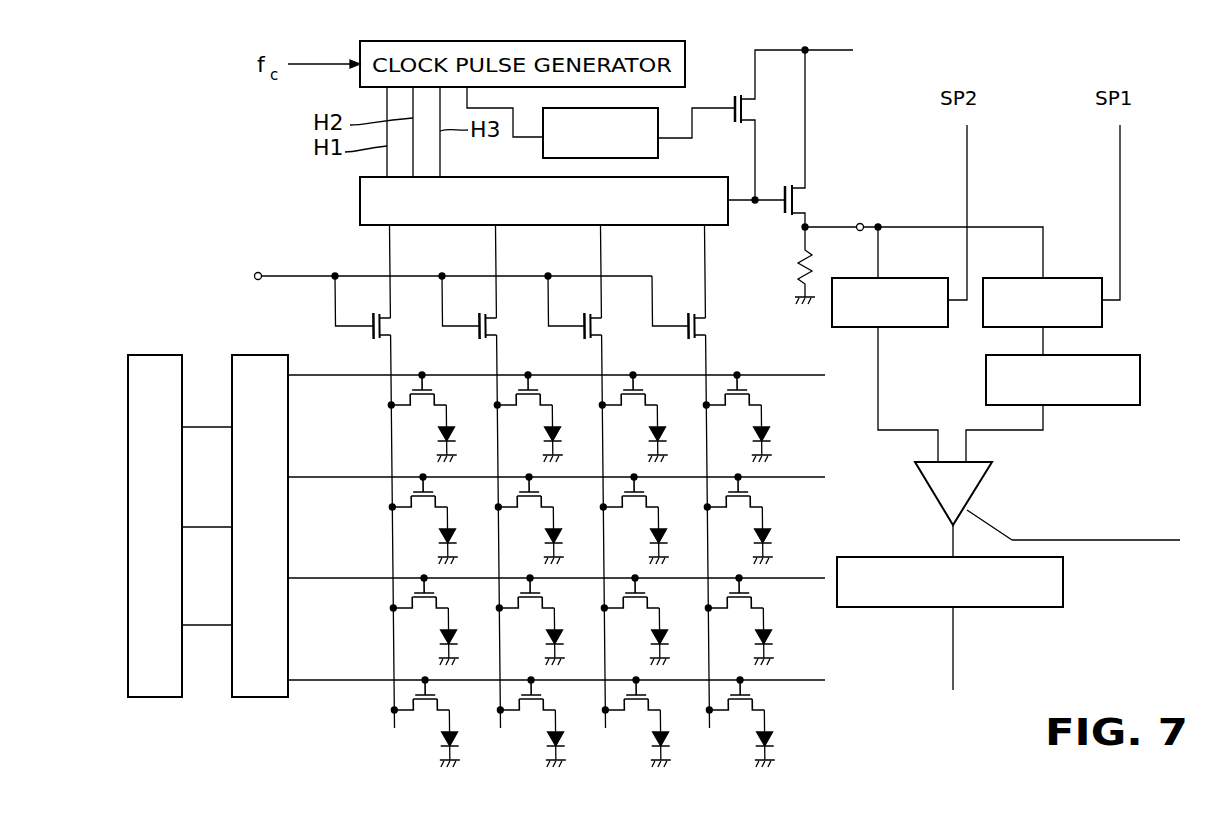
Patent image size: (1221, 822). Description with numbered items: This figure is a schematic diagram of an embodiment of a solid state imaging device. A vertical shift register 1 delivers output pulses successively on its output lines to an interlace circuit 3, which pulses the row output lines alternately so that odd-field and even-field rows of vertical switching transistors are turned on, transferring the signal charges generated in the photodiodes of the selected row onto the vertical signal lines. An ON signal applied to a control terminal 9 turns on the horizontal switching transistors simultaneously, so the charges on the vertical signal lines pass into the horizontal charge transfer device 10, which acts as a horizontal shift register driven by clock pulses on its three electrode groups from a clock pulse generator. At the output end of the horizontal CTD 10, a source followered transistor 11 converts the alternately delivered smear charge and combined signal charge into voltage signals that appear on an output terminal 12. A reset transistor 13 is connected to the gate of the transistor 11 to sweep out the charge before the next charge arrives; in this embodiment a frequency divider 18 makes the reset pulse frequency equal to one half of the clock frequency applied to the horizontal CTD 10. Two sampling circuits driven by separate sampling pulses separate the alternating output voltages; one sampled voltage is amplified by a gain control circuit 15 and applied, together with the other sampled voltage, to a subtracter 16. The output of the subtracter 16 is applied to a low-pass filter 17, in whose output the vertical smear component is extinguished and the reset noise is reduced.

The vertical shift register 1 is at (158, 698).
The interlace circuit 3 is at (262, 698).
The control terminal 9 is at (254, 276).
The horizontal charge transfer device 10 is at (360, 200).
The source followered transistor 11 is at (798, 207).
The output terminal 12 is at (863, 223).
The reset transistor 13 is at (730, 123).
The gain control circuit 15 is at (1140, 378).
The subtracter 16 is at (977, 492).
The low-pass filter 17 is at (1063, 585).
The frequency divider 18 is at (543, 150).